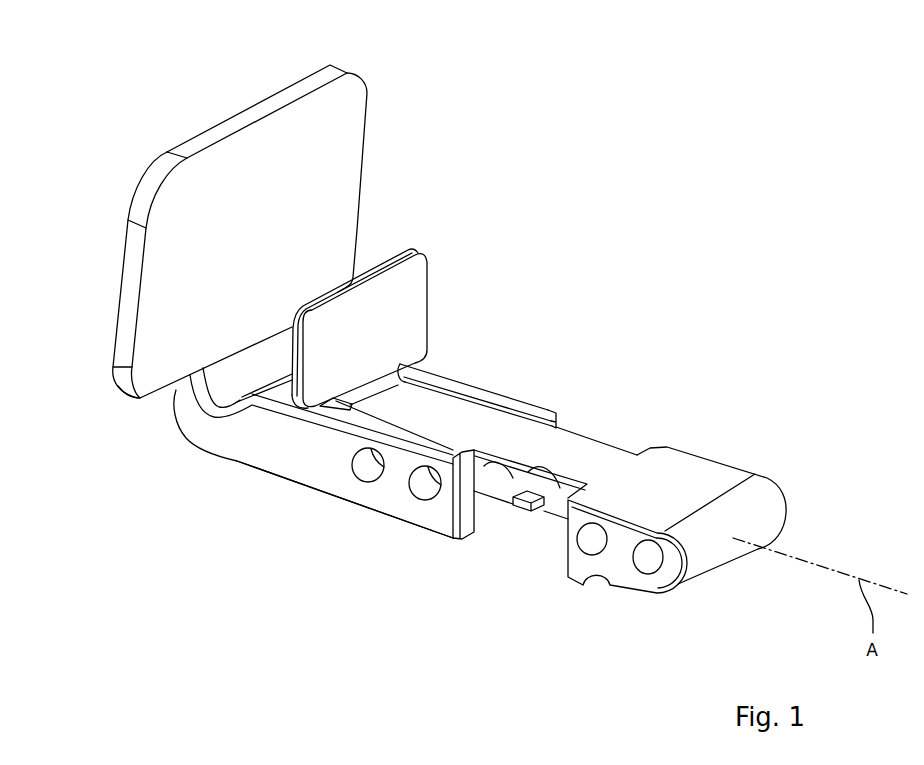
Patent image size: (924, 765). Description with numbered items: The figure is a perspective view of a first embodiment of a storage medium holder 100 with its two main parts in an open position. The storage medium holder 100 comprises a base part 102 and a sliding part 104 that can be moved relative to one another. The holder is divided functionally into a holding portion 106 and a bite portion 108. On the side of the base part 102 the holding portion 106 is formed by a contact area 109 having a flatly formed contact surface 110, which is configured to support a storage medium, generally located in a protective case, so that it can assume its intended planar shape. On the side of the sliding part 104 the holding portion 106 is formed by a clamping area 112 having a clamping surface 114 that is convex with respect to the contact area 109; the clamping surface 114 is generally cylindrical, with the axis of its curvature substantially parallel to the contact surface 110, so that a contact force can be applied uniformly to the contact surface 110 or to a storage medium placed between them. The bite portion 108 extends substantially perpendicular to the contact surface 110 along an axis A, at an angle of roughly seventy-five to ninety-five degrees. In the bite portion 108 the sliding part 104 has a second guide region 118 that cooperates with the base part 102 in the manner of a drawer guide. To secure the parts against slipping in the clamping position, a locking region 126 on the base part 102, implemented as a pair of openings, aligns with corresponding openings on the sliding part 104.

The storage medium holder 100 is at (716, 309).
The base part 102 is at (254, 463).
The sliding part 104 is at (742, 468).
The holding portion 106 is at (130, 157).
The bite portion 108 is at (624, 627).
The contact area 109 is at (139, 399).
The contact surface 110 is at (250, 154).
The clamping area 112 is at (422, 258).
The clamping surface 114 is at (374, 276).
The second guide region 118 is at (518, 506).
The locking region 126 is at (428, 508).